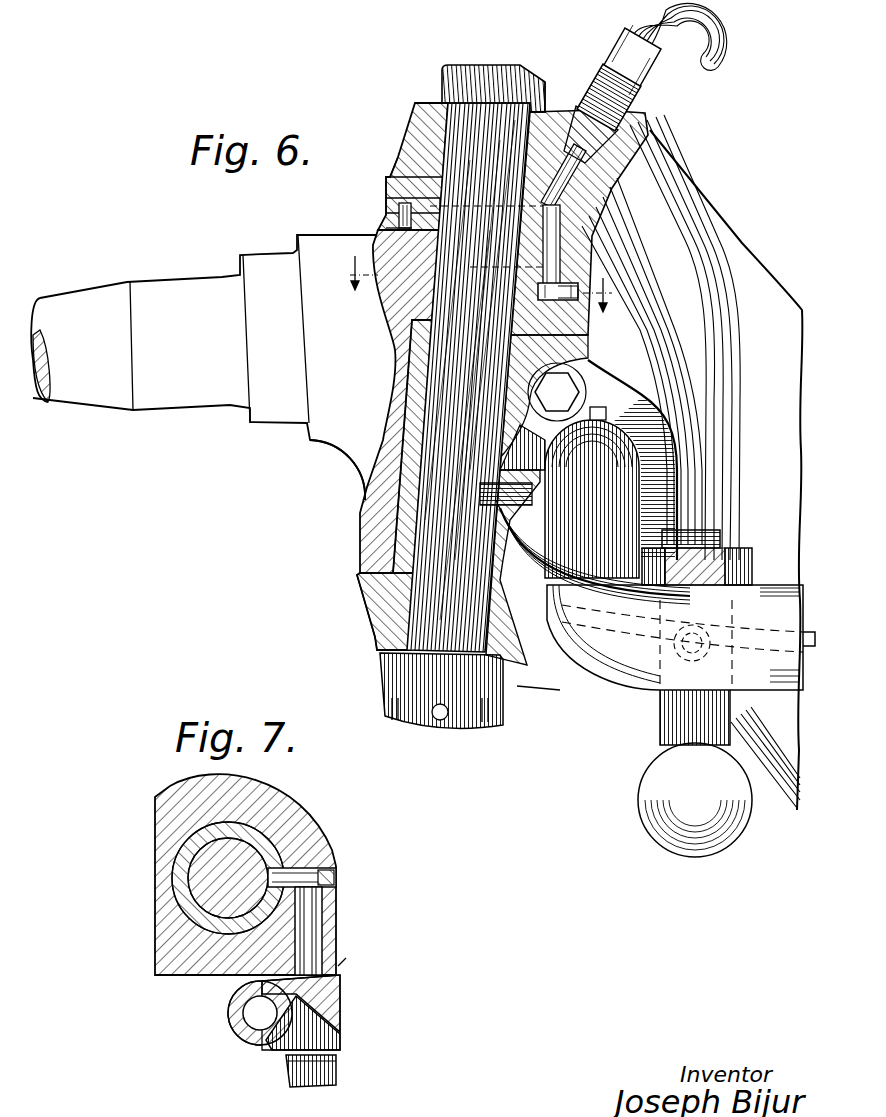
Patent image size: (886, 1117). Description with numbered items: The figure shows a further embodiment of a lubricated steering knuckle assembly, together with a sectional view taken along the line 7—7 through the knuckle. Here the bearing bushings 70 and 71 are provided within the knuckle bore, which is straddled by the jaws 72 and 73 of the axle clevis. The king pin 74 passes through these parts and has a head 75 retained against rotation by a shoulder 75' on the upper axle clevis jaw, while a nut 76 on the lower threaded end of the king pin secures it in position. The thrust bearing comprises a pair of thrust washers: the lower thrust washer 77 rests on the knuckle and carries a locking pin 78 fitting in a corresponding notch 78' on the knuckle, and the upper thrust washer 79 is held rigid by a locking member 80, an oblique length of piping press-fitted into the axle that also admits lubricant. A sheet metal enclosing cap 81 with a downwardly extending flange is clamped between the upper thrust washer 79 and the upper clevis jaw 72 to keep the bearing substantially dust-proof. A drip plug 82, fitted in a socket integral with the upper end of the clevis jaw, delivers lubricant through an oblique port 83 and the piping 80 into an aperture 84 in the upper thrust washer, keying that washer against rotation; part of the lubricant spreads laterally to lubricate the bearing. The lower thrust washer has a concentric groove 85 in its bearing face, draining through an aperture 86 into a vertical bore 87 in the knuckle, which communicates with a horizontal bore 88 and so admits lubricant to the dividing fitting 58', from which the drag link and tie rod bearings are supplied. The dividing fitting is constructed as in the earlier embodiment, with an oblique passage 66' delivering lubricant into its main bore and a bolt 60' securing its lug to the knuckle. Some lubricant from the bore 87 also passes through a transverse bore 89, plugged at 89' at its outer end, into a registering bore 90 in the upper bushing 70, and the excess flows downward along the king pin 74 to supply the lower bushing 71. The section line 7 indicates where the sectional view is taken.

In FIG. 6, the upper bearing bushing 70 is at (395, 320).
In FIG. 7, the upper bearing bushing 70 is at (240, 825).
In FIG. 6, the lower bearing bushing 71 is at (400, 533).
In FIG. 6, the upper axle clevis jaw 72 is at (418, 132).
In FIG. 6, the lower axle clevis jaw 73 is at (383, 617).
In FIG. 6, the king pin 74 is at (387, 417).
In FIG. 6, the head 75 is at (483, 342).
In FIG. 6, the shoulder 75' is at (560, 82).
In FIG. 6, the nut 76 is at (392, 682).
In FIG. 6, the lower thrust washer 77 is at (583, 218).
In FIG. 6, the locking pin 78 is at (376, 211).
In FIG. 6, the notch 78' is at (375, 223).
In FIG. 6, the upper thrust washer 79 is at (402, 160).
In FIG. 6, the locking member / oblique length of piping 80 is at (590, 187).
In FIG. 6, the sheet metal enclosing cap 81 is at (388, 180).
In FIG. 6, the drip plug 82 is at (623, 123).
In FIG. 6, the oblique port 83 is at (623, 167).
In FIG. 6, the aperture 84 is at (567, 190).
In FIG. 6, the concentric groove 85 is at (392, 196).
In FIG. 6, the aperture 86 is at (580, 242).
In FIG. 6, the vertical bore 87 is at (580, 265).
In FIG. 7, the vertical bore 87 is at (313, 887).
In FIG. 6, the horizontal bore 88 is at (590, 318).
In FIG. 7, the horizontal bore 88 is at (308, 928).
In FIG. 6, the transverse bore 89 is at (602, 447).
In FIG. 7, the transverse bore 89 is at (326, 842).
In FIG. 7, the plug 89' is at (362, 862).
In FIG. 7, the bore 90 is at (293, 865).
In FIG. 6, the dividing fitting 58' is at (585, 505).
In FIG. 7, the dividing fitting 58' is at (259, 1012).
In FIG. 7, the oblique passage 66' is at (342, 1004).
In FIG. 7, the bolt 60' is at (343, 1071).
In FIG. 6, the section line 7— 7 is at (480, 295).